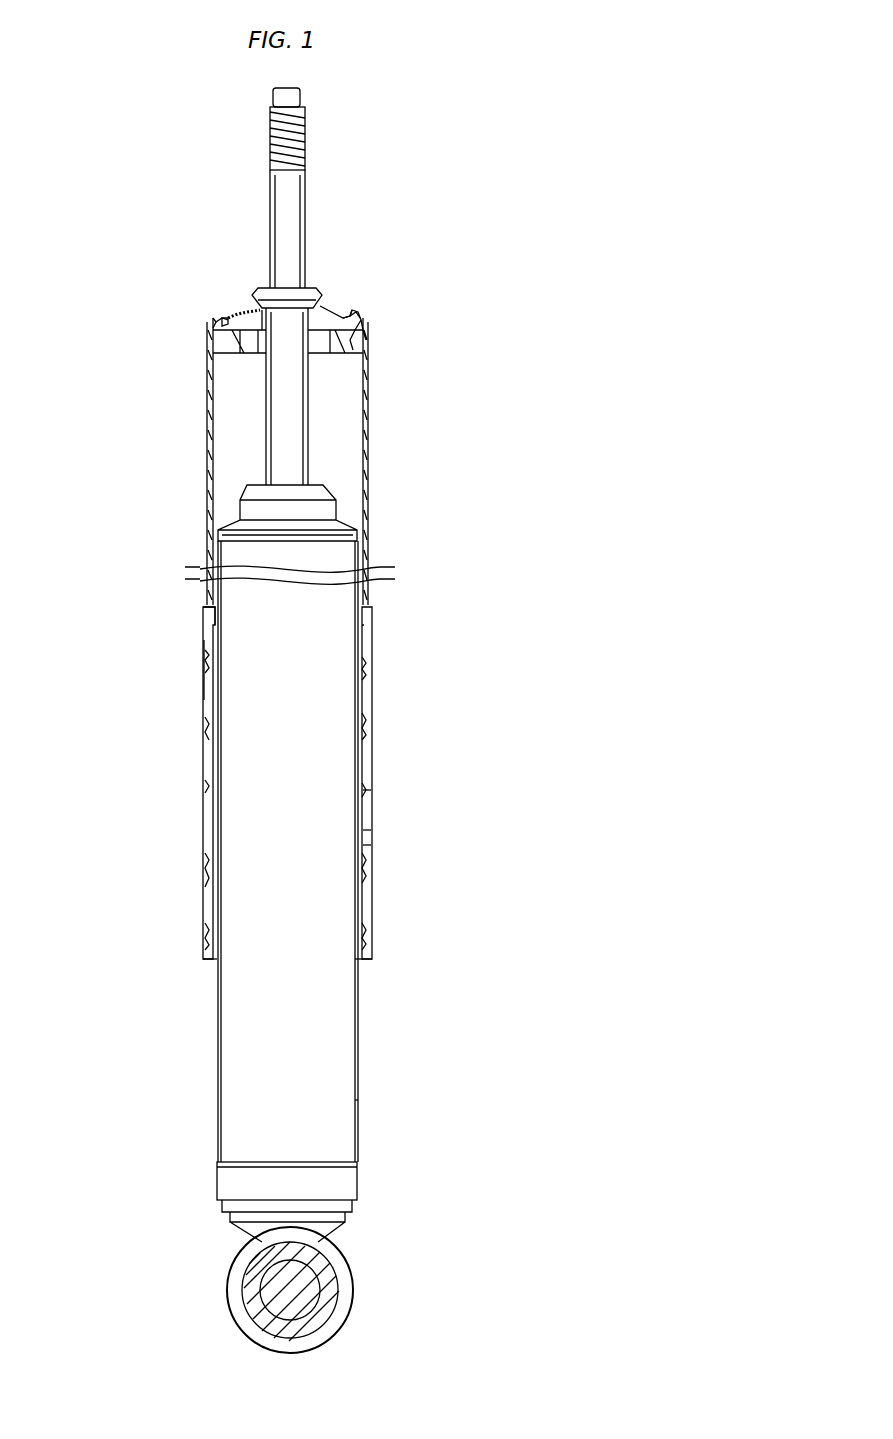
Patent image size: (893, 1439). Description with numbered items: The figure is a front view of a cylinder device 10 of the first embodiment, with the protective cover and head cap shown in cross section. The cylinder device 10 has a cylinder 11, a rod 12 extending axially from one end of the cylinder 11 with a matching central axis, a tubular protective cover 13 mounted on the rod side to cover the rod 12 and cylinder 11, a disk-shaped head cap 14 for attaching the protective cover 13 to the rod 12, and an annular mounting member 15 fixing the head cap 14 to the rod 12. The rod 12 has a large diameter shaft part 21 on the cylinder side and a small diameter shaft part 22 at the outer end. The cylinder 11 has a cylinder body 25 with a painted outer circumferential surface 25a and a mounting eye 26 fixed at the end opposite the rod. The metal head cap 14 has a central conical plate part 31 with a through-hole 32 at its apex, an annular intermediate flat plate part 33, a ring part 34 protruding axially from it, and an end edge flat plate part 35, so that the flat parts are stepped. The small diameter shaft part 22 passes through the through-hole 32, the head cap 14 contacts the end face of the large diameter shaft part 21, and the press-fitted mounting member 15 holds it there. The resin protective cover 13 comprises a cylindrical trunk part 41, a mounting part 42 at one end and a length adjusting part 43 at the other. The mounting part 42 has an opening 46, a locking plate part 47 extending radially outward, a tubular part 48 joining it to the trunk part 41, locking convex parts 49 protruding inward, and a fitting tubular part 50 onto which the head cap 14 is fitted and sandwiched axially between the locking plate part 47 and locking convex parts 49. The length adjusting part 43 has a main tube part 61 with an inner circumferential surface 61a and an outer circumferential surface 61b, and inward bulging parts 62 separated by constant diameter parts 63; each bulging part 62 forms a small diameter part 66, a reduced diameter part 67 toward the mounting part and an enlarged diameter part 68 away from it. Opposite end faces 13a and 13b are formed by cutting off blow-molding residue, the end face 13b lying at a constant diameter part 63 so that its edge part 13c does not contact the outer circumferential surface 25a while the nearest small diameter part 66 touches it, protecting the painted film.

The cylinder device 10 is at (522, 155).
The cylinder 11 is at (362, 1036).
The rod 12 is at (306, 190).
The protective cover 13 is at (372, 462).
The end face 13a is at (345, 302).
The end face 13b is at (372, 962).
The edge part 13c is at (206, 962).
The head cap 14 is at (236, 317).
The mounting member 15 is at (280, 294).
The large diameter shaft part 21 is at (295, 426).
The small diameter shaft part 22 is at (292, 232).
The cylinder body 25 is at (216, 1120).
The outer circumferential surface 25a is at (360, 1102).
The mounting eye 26 is at (228, 1284).
The conical plate part 31 is at (258, 330).
The through-hole 32 is at (268, 330).
The intermediate flat plate part 33 is at (242, 340).
The ring part 34 is at (228, 338).
The end edge flat plate part 35 is at (214, 320).
The trunk part 41 is at (362, 516).
The mounting part 42 is at (366, 305).
The length adjusting part 43 is at (376, 621).
The opening 46 is at (226, 320).
The locking plate part 47 is at (222, 320).
The tubular part 48 is at (369, 334).
The locking convex parts 49 is at (360, 346).
The fitting tubular part 50 is at (366, 315).
The main tube part 61 is at (208, 618).
The inner circumferential surface 61a is at (218, 612).
The outer circumferential surface 61b is at (205, 700).
The bulging parts 62 is at (352, 678).
The constant diameter parts 63 is at (362, 742).
The small diameter part 66 is at (352, 840).
The reduced diameter part 67 is at (357, 792).
The enlarged diameter part 68 is at (352, 832).